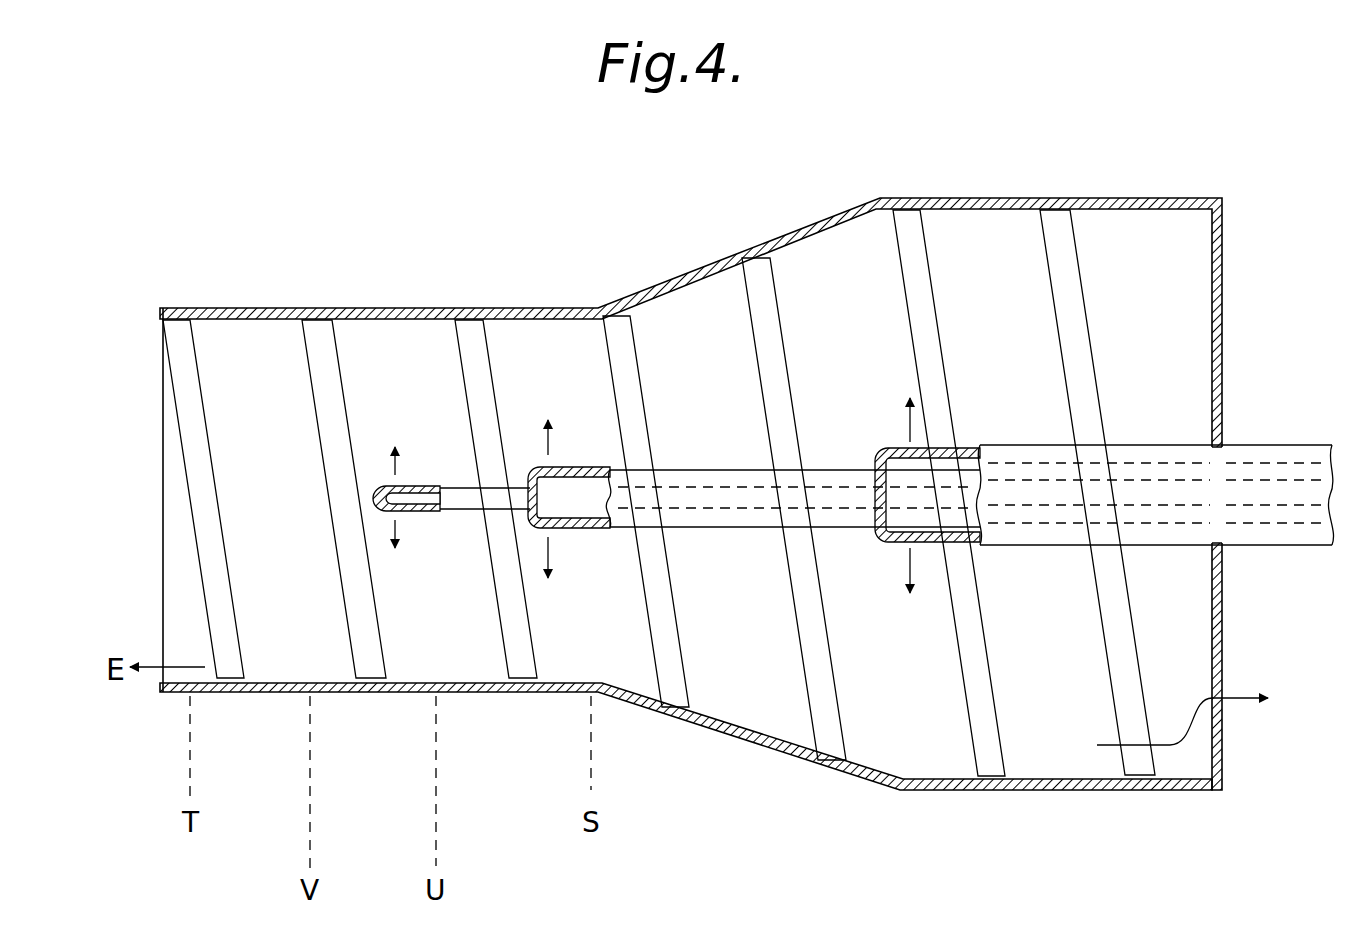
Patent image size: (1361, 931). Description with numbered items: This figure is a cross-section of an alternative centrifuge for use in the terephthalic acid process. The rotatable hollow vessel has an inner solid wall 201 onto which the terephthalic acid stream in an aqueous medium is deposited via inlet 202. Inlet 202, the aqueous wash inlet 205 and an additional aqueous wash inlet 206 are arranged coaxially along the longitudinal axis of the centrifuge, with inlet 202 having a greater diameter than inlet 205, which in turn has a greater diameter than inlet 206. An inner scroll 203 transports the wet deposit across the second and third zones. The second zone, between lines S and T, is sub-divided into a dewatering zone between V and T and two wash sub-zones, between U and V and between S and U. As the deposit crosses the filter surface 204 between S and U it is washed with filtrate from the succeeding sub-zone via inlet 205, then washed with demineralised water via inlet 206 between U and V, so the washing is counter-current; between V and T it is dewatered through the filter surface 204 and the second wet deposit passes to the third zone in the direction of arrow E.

The inner solid wall 201 is at (1120, 212).
The inlet 202 is at (1184, 535).
The inner scroll 203 is at (1093, 362).
The filter surface 204 is at (258, 694).
The inlet 205 is at (702, 468).
The additional aqueous wash inlet 206 is at (418, 484).